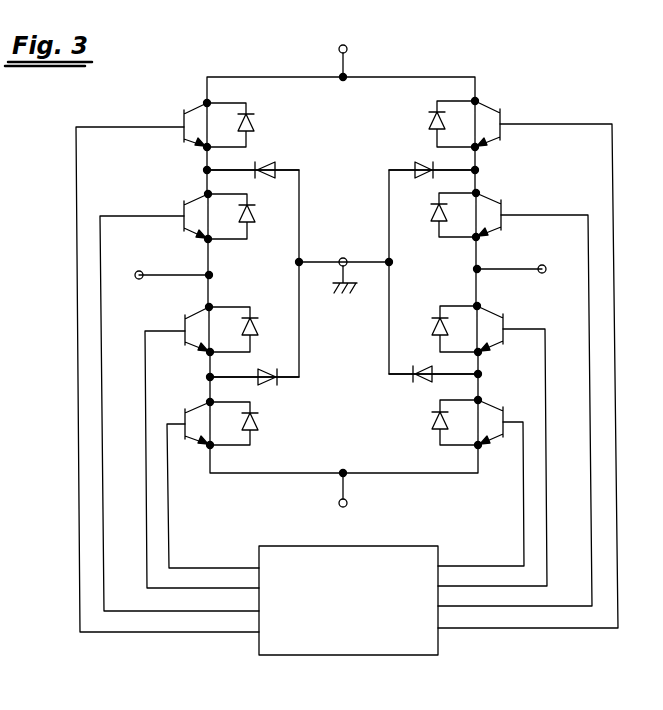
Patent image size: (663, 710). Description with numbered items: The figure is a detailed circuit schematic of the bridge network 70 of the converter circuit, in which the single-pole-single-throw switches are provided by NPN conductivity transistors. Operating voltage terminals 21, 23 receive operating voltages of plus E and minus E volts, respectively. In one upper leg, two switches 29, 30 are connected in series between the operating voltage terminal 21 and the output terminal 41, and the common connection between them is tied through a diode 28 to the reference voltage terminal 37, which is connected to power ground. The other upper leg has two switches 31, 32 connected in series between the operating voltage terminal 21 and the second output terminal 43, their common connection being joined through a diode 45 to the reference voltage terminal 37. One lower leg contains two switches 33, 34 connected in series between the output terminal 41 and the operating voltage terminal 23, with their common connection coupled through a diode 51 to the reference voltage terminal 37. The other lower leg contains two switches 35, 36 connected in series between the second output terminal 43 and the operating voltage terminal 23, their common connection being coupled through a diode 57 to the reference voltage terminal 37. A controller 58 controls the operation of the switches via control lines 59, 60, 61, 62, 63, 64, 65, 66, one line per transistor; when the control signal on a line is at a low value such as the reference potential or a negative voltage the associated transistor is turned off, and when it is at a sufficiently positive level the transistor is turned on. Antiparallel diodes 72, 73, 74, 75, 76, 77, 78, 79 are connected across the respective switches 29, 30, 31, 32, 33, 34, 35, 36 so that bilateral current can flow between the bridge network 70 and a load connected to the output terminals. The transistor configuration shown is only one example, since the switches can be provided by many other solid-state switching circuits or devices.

The operating voltage terminal 21 is at (348, 49).
The operating voltage terminal 23 is at (348, 503).
The diode 28 is at (252, 164).
The SPST switch 29 is at (211, 125).
The SPST switch 30 is at (211, 195).
The SPST switch 31 is at (480, 124).
The SPST switch 32 is at (480, 194).
The SPST switch 33 is at (212, 330).
The SPST switch 34 is at (212, 424).
The SPST switch 35 is at (482, 329).
The SPST switch 36 is at (482, 423).
The reference voltage terminal 37 is at (344, 260).
The output terminal 41 is at (139, 271).
The second output terminal 43 is at (542, 265).
The diode 45 is at (426, 162).
The diode 51 is at (279, 383).
The diode 57 is at (413, 382).
The controller 58 is at (418, 545).
The control line 59 is at (238, 633).
The control line 60 is at (208, 607).
The control line 61 is at (498, 628).
The control line 62 is at (473, 607).
The control line 63 is at (222, 588).
The control line 64 is at (238, 568).
The control line 65 is at (468, 585).
The control line 66 is at (455, 566).
The bridge network 70 is at (357, 179).
The antiparallel diode 72 is at (249, 112).
The antiparallel diode 73 is at (252, 205).
The antiparallel diode 74 is at (433, 112).
The antiparallel diode 75 is at (432, 208).
The antiparallel diode 76 is at (255, 318).
The antiparallel diode 77 is at (256, 418).
The antiparallel diode 78 is at (435, 318).
The antiparallel diode 79 is at (435, 418).